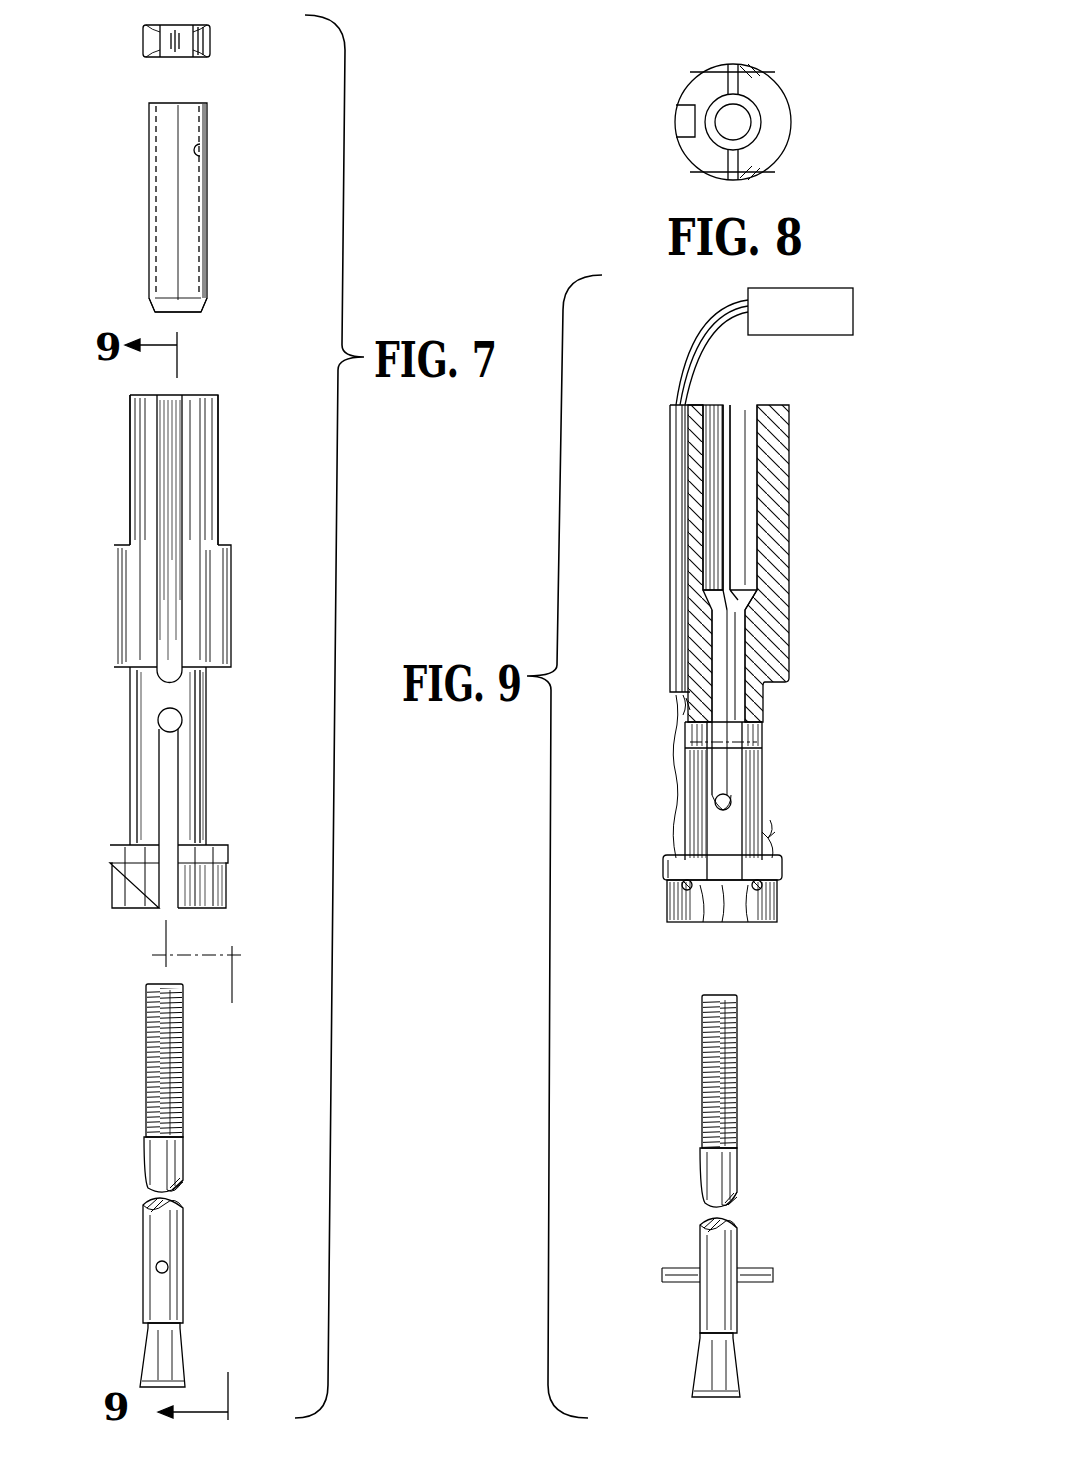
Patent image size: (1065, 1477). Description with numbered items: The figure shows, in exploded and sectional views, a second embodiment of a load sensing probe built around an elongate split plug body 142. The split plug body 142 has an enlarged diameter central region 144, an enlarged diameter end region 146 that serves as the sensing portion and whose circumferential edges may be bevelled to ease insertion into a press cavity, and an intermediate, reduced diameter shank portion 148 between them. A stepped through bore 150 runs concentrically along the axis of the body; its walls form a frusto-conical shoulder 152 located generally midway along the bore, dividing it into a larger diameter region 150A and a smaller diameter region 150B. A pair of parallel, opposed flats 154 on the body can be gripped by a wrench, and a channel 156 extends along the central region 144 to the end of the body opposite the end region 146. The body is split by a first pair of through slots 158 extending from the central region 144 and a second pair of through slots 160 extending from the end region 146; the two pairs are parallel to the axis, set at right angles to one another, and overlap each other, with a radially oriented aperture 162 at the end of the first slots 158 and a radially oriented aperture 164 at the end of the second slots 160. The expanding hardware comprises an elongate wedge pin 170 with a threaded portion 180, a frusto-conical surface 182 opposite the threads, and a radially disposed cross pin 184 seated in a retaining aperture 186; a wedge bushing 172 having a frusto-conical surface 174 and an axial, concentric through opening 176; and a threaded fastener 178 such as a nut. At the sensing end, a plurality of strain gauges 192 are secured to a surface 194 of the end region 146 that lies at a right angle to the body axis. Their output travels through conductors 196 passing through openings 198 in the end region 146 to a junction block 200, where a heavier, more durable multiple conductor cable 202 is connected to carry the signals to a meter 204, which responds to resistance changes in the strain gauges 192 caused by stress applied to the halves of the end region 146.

In FIG. 7, the split plug body 142 is at (95, 585).
In FIG. 8, the split plug body 142 is at (800, 148).
In FIG. 7, the enlarged diameter central region 144 is at (205, 520).
In FIG. 9, the enlarged diameter central region 144 is at (777, 460).
In FIG. 7, the enlarged diameter end region 146 is at (140, 890).
In FIG. 9, the enlarged diameter end region 146 is at (780, 878).
In FIG. 7, the shank portion 148 is at (205, 755).
In FIG. 9, the shank portion 148 is at (723, 791).
In FIG. 9, the through bore 150 is at (760, 630).
In FIG. 9, the larger diameter region 150A is at (745, 518).
In FIG. 9, the smaller diameter region 150B is at (738, 777).
In FIG. 8, the frusto-conical shoulder 152 is at (755, 105).
In FIG. 9, the frusto-conical shoulder 152 is at (750, 605).
In FIG. 7, the flats 154 is at (130, 428).
In FIG. 8, the flats 154 is at (710, 65).
In FIG. 7, the channel 156 is at (165, 405).
In FIG. 8, the channel 156 is at (675, 118).
In FIG. 9, the channel 156 is at (670, 435).
In FIG. 8, the first pair of through slots 158 is at (740, 68).
In FIG. 9, the first pair of through slots 158 is at (727, 420).
In FIG. 7, the second pair of through slots 160 is at (160, 805).
In FIG. 9, the radially oriented aperture 162 is at (732, 803).
In FIG. 7, the radially oriented aperture 164 is at (158, 722).
In FIG. 9, the radially oriented aperture 164 is at (757, 735).
In FIG. 7, the elongate wedge pin 170 is at (168, 1161).
In FIG. 9, the elongate wedge pin 170 is at (724, 1170).
In FIG. 7, the wedge bushing 172 is at (148, 183).
In FIG. 7, the frusto-conical surface 174 is at (207, 306).
In FIG. 7, the through opening 176 is at (203, 150).
In FIG. 7, the threaded fastener 178 is at (210, 43).
In FIG. 7, the threaded portion 180 is at (146, 1040).
In FIG. 9, the threaded portion 180 is at (712, 1052).
In FIG. 7, the frusto-conical surface 182 is at (160, 1355).
In FIG. 9, the frusto-conical surface 182 is at (718, 1368).
In FIG. 7, the cross pin 184 is at (166, 1275).
In FIG. 9, the cross pin 184 is at (675, 1278).
In FIG. 7, the retaining aperture 186 is at (158, 1266).
In FIG. 9, the strain gauges 192 is at (690, 920).
In FIG. 9, the surface 194 is at (724, 905).
In FIG. 9, the conductors 196 is at (675, 797).
In FIG. 9, the openings 198 is at (666, 862).
In FIG. 9, the junction block 200 is at (684, 710).
In FIG. 9, the multiple conductor cable 202 is at (700, 345).
In FIG. 9, the meter 204 is at (853, 312).